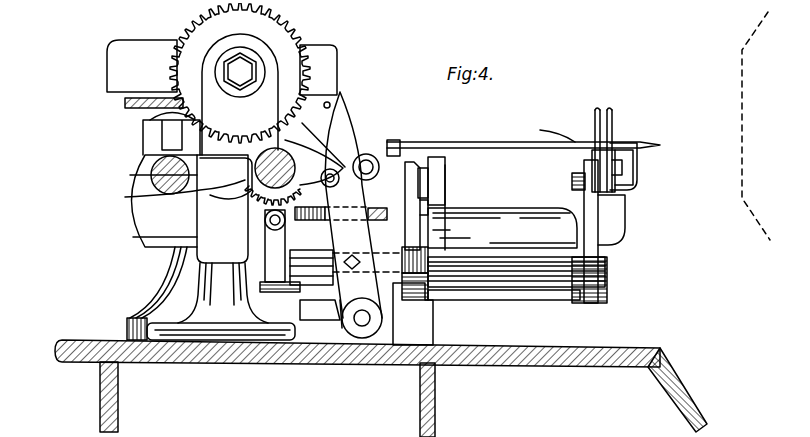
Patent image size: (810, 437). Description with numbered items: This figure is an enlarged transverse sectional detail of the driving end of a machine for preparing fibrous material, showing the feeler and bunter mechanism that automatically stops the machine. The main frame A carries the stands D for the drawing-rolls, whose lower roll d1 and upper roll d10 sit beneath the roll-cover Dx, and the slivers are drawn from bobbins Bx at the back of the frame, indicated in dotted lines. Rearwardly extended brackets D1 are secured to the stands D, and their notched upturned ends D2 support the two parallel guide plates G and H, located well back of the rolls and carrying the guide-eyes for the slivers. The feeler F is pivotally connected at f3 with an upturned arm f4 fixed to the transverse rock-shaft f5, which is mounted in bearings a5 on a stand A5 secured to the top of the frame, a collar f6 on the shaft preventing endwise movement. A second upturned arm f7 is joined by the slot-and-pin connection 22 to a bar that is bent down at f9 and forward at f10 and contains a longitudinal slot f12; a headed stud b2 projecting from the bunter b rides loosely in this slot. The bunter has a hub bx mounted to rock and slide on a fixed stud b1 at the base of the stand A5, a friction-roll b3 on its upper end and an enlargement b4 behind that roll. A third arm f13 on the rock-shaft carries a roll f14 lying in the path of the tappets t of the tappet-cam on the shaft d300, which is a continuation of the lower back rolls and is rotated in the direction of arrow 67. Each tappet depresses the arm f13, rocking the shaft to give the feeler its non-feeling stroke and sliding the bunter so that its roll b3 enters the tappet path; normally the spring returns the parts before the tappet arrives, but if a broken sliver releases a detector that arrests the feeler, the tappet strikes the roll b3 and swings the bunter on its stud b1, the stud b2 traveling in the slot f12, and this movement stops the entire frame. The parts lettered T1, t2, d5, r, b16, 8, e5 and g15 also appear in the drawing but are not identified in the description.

The main frame A is at (280, 363).
The stand A5 is at (400, 340).
The stands D is at (152, 268).
The roll-cover Dx is at (138, 42).
The brackets D1 is at (528, 213).
The upturned ends of brackets D2 is at (638, 172).
The lower roll d1 is at (152, 168).
The valve rod d5 is at (608, 110).
The upper roll d10 is at (135, 106).
The shaft d300 is at (262, 150).
The gear hub arm T1 is at (240, 148).
The tappets t is at (172, 192).
The link t2 is at (335, 172).
The arrow 67 is at (240, 192).
The pivotal connection f3 is at (440, 170).
The upturned arm f4 is at (600, 222).
The rock-shaft f5 is at (540, 290).
The collar f6 is at (355, 285).
The second upturned arm f7 is at (448, 180).
The bent-down portion of bar f9 is at (433, 208).
The forward portion of bar f10 is at (436, 258).
The longitudinal slot f12 is at (378, 222).
The third arm f13 is at (246, 240).
The roll f14 is at (257, 225).
The pawl r is at (300, 290).
The bunter b is at (353, 205).
The fixed stud b1 is at (350, 330).
The headed stud b2 is at (316, 222).
The friction-roll b3 is at (350, 160).
The enlargement b4 is at (372, 165).
The collar b16 is at (396, 160).
The hub of bunter bx is at (360, 328).
The slot-and-pin connection 22 is at (412, 185).
The clamp 8 is at (440, 185).
The bearings a5 is at (425, 293).
The cap e5 is at (596, 112).
The guide plate G is at (614, 140).
The guide plate H is at (585, 136).
The feeler F is at (603, 190).
The spring g15 is at (640, 147).
The bobbins Bx is at (742, 84).